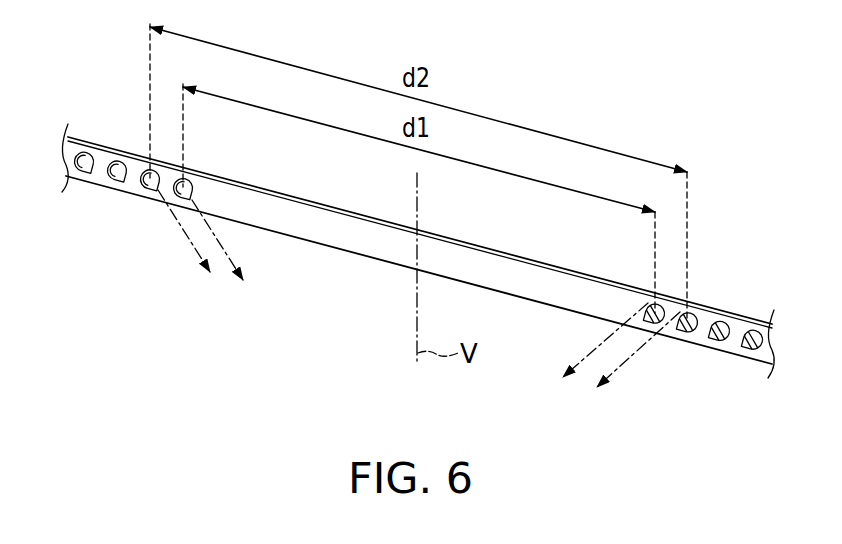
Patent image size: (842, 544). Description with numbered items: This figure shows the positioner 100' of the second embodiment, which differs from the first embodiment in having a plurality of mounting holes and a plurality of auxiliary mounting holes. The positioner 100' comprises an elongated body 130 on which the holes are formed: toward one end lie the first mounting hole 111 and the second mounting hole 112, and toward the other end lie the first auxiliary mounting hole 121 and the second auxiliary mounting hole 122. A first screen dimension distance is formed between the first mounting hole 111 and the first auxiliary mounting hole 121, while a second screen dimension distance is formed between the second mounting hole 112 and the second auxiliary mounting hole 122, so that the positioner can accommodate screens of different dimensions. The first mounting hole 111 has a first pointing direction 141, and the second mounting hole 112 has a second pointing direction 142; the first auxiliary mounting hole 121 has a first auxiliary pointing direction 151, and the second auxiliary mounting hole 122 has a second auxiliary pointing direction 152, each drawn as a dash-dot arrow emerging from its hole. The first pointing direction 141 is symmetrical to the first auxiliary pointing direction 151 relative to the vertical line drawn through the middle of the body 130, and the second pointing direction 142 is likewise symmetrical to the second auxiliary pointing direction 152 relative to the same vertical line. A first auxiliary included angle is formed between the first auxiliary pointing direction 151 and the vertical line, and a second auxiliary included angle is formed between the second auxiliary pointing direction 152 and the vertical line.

The positioner 100' is at (407, 213).
The first mounting hole 111 is at (188, 170).
The second mounting hole 112 is at (143, 166).
The first auxiliary mounting hole 121 is at (642, 297).
The second auxiliary mounting hole 122 is at (696, 308).
The body 130 is at (377, 247).
The first pointing direction 141 is at (225, 263).
The second pointing direction 142 is at (192, 247).
The first auxiliary pointing direction 151 is at (583, 367).
The second auxiliary pointing direction 152 is at (623, 368).